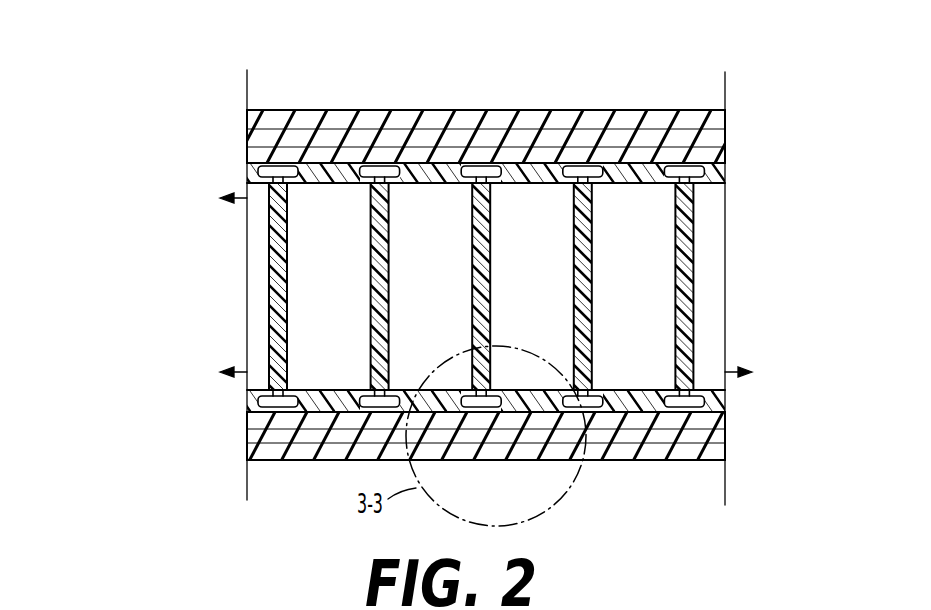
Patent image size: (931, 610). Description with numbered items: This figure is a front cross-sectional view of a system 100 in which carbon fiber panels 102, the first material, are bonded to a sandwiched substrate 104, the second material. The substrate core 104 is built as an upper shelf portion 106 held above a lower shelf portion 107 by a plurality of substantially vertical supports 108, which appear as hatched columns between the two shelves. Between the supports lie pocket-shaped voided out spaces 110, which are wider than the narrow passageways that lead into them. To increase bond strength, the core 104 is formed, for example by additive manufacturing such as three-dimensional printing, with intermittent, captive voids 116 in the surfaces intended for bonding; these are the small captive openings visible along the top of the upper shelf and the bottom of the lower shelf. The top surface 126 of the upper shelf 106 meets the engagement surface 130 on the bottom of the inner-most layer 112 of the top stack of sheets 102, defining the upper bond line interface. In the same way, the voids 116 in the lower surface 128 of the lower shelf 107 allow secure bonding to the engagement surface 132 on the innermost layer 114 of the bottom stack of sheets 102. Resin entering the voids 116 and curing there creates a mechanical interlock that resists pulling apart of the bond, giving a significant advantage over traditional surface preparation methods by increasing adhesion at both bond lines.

The system 100 is at (128, 389).
The carbon fiber panels 102 is at (252, 122).
The sandwiched substrate 104 is at (337, 396).
The upper shelf portion 106 is at (620, 168).
The lower shelf portion 107 is at (398, 412).
The substantially vertical supports 108 is at (482, 243).
The voided out spaces 110 is at (307, 333).
The inner-most layer of the top stack of sheets 112 is at (435, 158).
The innermost layer of the bottom stack of sheets 114 is at (703, 412).
The voids 116 is at (270, 194).
The top surface of the upper shelf 126 is at (397, 170).
The lower surface of the lower shelf 128 is at (432, 400).
The engagement surface 130 is at (532, 163).
The engagement surface 132 is at (608, 412).